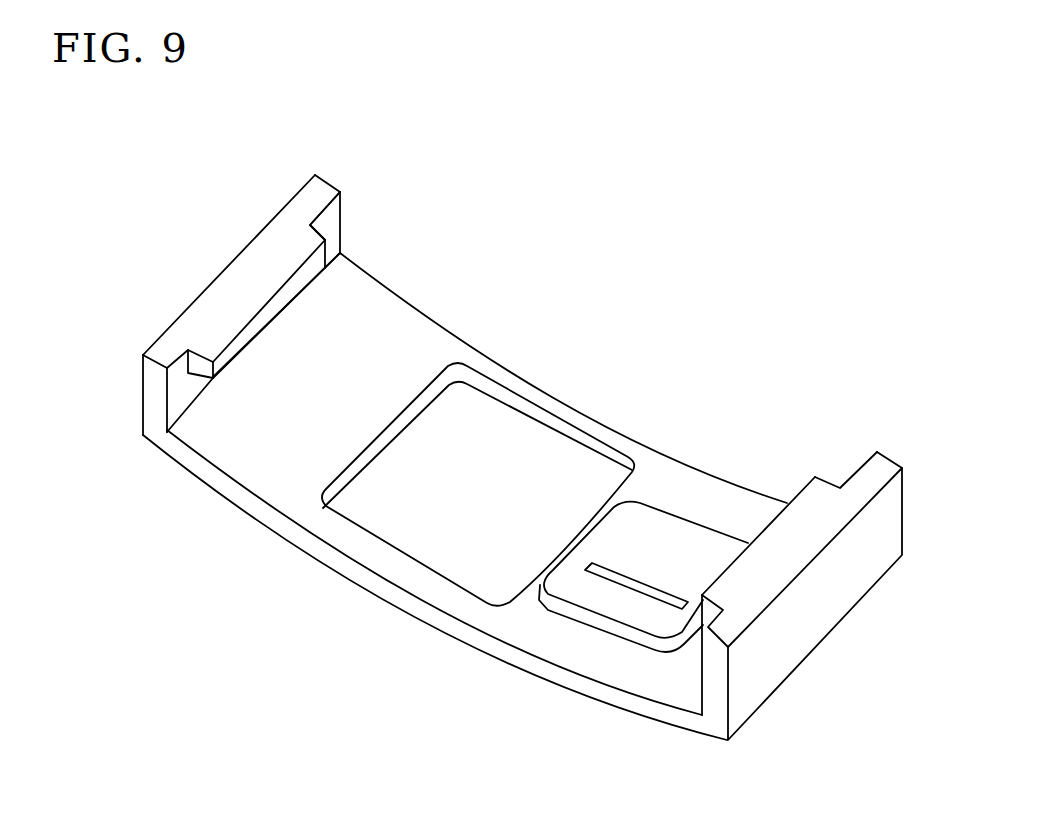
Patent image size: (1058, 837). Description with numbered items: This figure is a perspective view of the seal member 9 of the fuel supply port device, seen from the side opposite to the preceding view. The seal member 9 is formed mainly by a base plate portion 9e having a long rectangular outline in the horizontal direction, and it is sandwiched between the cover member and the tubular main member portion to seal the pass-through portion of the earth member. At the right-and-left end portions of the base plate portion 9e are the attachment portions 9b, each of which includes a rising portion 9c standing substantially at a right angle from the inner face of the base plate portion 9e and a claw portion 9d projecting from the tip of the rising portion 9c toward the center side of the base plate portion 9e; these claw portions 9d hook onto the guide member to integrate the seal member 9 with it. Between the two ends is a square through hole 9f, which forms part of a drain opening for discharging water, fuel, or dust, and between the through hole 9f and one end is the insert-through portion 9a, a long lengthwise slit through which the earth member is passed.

The seal member 9 is at (392, 320).
The insert-through portion 9a is at (622, 573).
The attachment portion 9b is at (243, 320).
The rising portion 9c is at (140, 398).
The claw portion 9d is at (295, 268).
The base plate portion 9e is at (725, 495).
The through hole 9f is at (507, 435).